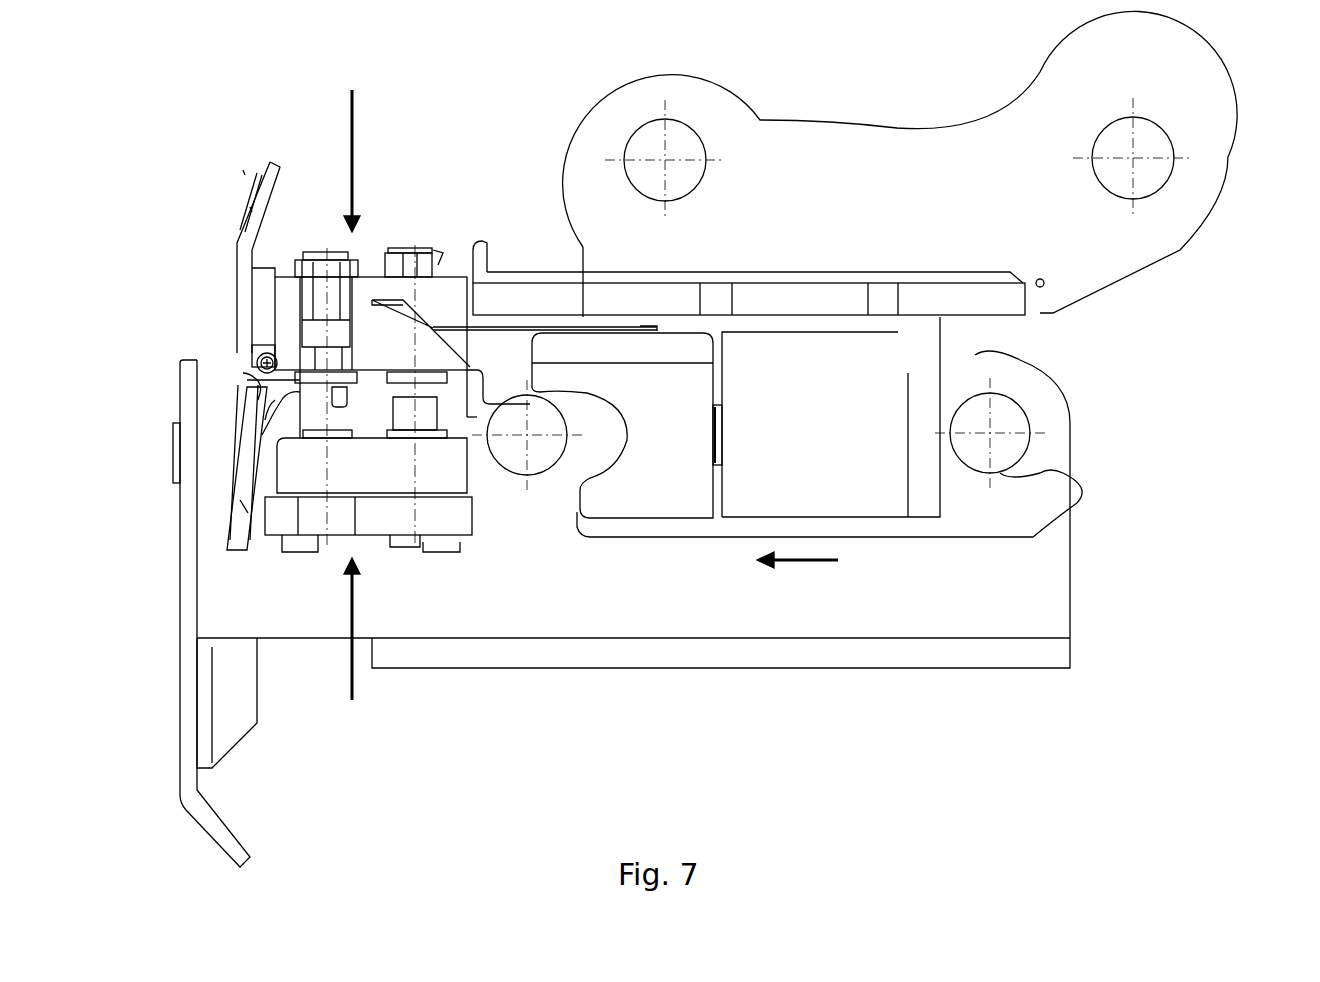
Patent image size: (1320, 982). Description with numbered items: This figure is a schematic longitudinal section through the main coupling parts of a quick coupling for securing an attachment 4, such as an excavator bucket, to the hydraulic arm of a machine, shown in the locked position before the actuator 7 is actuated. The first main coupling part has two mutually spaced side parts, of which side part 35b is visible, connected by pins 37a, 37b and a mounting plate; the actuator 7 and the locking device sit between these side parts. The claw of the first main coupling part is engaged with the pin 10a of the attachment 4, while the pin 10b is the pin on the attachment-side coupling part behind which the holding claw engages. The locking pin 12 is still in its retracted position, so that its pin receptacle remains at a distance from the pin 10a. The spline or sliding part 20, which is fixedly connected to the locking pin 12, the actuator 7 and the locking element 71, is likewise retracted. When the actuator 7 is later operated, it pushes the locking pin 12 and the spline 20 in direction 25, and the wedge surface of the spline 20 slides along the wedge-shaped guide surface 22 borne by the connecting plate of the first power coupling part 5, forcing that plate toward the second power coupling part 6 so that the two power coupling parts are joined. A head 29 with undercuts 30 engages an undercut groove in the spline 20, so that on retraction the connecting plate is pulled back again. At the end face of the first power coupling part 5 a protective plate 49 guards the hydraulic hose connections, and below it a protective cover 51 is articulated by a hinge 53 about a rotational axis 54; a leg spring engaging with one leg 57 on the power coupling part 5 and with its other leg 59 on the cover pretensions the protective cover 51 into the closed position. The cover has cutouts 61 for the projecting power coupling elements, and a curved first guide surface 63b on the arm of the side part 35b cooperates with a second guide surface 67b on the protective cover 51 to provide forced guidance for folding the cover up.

The attachment 4 is at (177, 627).
The first power coupling part 5 is at (352, 148).
The second power coupling part 6 is at (352, 644).
The actuator 7 is at (860, 473).
The pin 10a is at (533, 458).
The pin 10b is at (1010, 438).
The locking pin 12 is at (653, 490).
The spline 20 is at (483, 282).
The guide surface 22 is at (395, 300).
The direction 25 is at (806, 566).
The head 29 is at (403, 303).
The undercuts 30 is at (417, 300).
The side part 35b is at (870, 172).
The pin 37a is at (672, 153).
The pin 37b is at (1147, 153).
The protective plate 49 is at (233, 243).
The protective cover 51 is at (267, 413).
The hinge 53 is at (250, 373).
The rotational axis 54 is at (257, 360).
The leg 57 is at (260, 353).
The leg 59 is at (247, 387).
The cutouts 61 is at (247, 520).
The first guide surface 63b is at (263, 433).
The second guide surface 67b is at (273, 420).
The locking element 71 is at (590, 343).